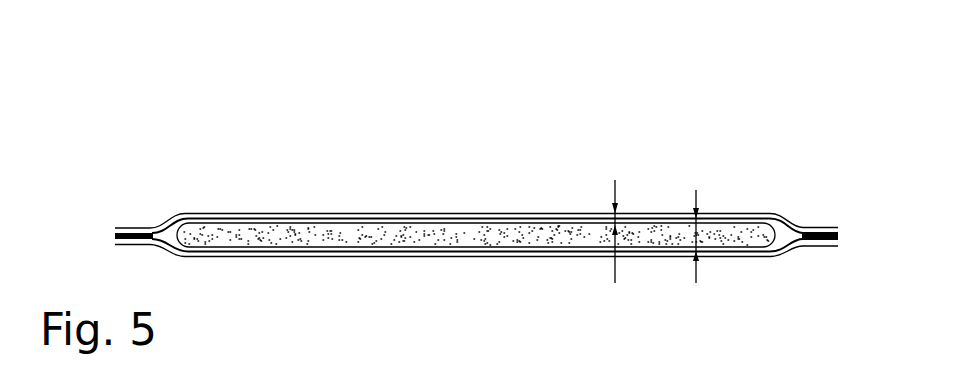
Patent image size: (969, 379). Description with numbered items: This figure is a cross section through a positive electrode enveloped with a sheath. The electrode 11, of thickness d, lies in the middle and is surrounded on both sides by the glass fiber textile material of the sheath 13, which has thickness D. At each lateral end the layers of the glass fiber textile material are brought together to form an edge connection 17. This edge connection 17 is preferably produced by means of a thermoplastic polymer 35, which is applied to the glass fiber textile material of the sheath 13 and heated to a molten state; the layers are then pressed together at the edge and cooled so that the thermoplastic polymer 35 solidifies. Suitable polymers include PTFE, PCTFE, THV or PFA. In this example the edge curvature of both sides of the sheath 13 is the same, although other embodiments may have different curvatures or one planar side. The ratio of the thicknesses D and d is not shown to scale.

The electrode 11 is at (320, 237).
The sheath 13 is at (417, 220).
The edge connection 17 is at (820, 217).
The thermoplastic polymer 35 is at (133, 231).
The thickness of the sheath D is at (617, 221).
The thickness of the electrode d is at (698, 237).